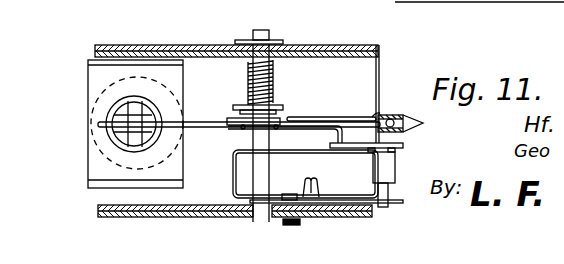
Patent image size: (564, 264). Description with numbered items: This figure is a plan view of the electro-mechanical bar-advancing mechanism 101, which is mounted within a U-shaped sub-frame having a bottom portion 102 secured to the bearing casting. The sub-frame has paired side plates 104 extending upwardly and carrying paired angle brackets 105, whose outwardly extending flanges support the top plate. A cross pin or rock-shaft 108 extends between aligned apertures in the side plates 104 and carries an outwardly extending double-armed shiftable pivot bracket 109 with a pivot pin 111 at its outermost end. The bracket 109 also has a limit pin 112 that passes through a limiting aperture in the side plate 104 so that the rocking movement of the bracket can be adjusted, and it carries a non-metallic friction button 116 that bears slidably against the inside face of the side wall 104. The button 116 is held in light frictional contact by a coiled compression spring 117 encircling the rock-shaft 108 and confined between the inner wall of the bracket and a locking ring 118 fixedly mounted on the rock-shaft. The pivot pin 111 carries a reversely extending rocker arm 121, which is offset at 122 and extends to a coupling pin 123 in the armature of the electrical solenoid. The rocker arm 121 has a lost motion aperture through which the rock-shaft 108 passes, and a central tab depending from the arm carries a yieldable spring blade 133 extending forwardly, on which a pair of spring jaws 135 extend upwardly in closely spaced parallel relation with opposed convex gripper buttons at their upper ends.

The bar-advancing mechanism 101 is at (115, 37).
The bottom portion 102 is at (348, 105).
The side plates 104 is at (380, 66).
The angle brackets 105 is at (164, 45).
The rock-shaft 108 is at (258, 30).
The shiftable pivot bracket 109 is at (281, 197).
The pivot pin 111 is at (393, 186).
The limit pin 112 is at (303, 194).
The friction button 116 is at (318, 190).
The coiled compression spring 117 is at (272, 76).
The locking ring 118 is at (242, 104).
The rocker arm 121 is at (214, 130).
The offset 122 is at (328, 136).
The coupling pin 123 is at (100, 101).
The spring blade 133 is at (372, 116).
The spring jaws 135 is at (416, 124).